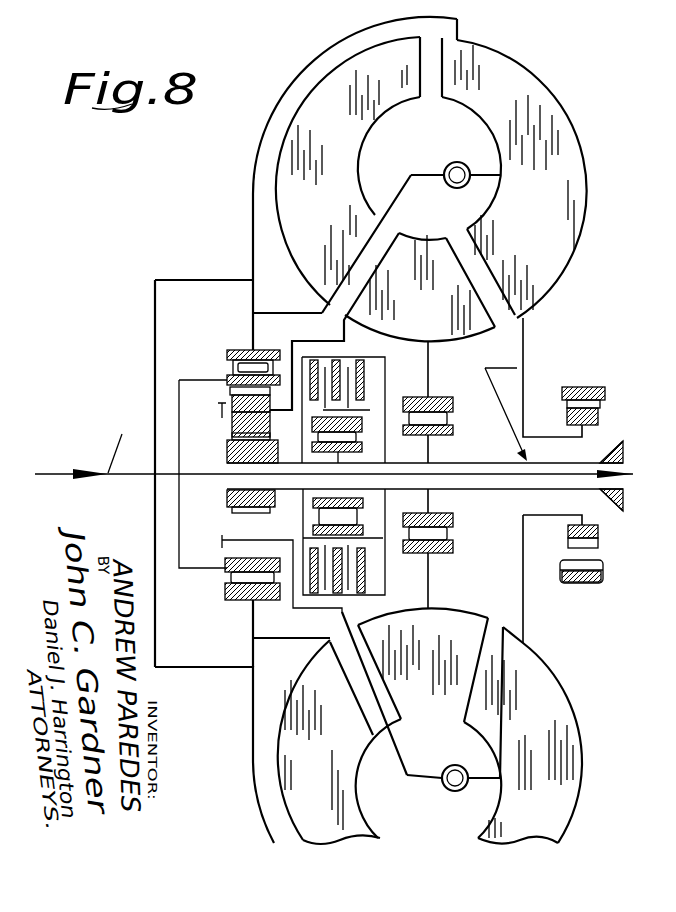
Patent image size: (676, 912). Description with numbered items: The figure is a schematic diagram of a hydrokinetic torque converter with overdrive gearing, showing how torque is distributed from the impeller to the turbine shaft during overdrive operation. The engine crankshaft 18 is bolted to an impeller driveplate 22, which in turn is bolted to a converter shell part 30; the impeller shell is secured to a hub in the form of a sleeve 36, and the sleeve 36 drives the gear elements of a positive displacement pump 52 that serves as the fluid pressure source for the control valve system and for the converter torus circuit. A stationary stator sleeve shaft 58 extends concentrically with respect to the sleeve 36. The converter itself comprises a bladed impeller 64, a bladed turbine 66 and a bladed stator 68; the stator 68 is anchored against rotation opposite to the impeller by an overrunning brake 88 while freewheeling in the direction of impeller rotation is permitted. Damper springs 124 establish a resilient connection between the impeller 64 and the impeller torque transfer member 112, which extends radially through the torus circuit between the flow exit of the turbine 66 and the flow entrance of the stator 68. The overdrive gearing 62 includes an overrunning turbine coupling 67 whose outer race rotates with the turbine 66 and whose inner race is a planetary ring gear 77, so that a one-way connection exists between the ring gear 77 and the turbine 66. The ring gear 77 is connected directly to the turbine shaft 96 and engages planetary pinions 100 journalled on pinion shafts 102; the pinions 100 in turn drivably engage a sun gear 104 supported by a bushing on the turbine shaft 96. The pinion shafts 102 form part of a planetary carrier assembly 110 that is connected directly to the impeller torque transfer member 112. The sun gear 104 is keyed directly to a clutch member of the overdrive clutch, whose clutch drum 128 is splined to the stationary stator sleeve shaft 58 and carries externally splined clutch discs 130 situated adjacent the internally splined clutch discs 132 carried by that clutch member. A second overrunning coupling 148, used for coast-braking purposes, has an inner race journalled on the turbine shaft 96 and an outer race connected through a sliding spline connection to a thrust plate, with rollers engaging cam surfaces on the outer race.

The crankshaft 18 is at (137, 477).
The impeller driveplate 22 is at (157, 341).
The converter shell part 30 is at (270, 118).
The sleeve 36 is at (540, 440).
The positive displacement pump 52 is at (608, 400).
The stator sleeve shaft 58 is at (500, 462).
The overdrive gearing 62 is at (300, 311).
The bladed impeller 64 is at (556, 106).
The bladed turbine 66 is at (281, 160).
The overrunning turbine coupling 67 is at (224, 367).
The bladed stator 68 is at (428, 240).
The planetary ring gear 77 is at (226, 381).
The overrunning brake 88 is at (455, 535).
The turbine shaft 96 is at (485, 477).
The planetary pinions 100 is at (232, 425).
The pinion shafts 102 is at (222, 410).
The sun gear 104 is at (227, 500).
The planetary carrier assembly 110 is at (193, 575).
The impeller torque transfer member 112 is at (322, 338).
The damper springs 124 is at (458, 162).
The clutch drum 128 is at (378, 352).
The externally splined clutch discs 130 is at (350, 567).
The internally splined clutch discs 132 is at (360, 587).
The second overrunning coupling 148 is at (308, 518).